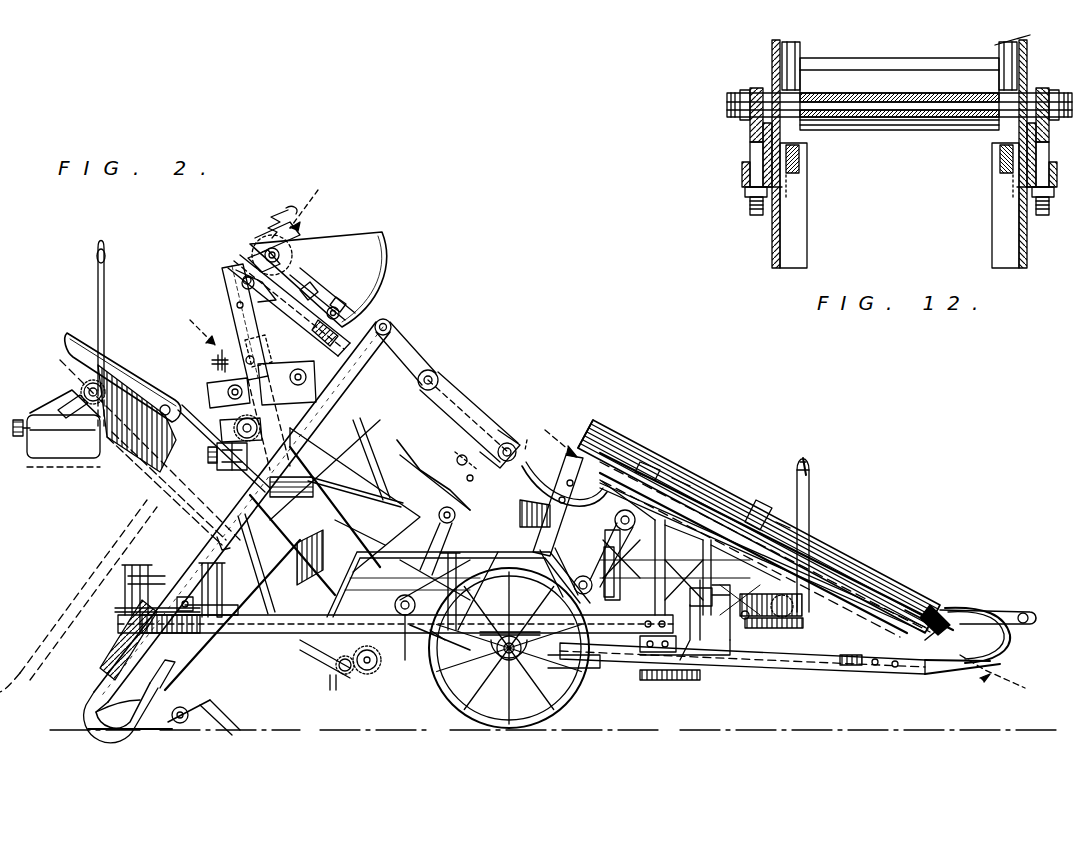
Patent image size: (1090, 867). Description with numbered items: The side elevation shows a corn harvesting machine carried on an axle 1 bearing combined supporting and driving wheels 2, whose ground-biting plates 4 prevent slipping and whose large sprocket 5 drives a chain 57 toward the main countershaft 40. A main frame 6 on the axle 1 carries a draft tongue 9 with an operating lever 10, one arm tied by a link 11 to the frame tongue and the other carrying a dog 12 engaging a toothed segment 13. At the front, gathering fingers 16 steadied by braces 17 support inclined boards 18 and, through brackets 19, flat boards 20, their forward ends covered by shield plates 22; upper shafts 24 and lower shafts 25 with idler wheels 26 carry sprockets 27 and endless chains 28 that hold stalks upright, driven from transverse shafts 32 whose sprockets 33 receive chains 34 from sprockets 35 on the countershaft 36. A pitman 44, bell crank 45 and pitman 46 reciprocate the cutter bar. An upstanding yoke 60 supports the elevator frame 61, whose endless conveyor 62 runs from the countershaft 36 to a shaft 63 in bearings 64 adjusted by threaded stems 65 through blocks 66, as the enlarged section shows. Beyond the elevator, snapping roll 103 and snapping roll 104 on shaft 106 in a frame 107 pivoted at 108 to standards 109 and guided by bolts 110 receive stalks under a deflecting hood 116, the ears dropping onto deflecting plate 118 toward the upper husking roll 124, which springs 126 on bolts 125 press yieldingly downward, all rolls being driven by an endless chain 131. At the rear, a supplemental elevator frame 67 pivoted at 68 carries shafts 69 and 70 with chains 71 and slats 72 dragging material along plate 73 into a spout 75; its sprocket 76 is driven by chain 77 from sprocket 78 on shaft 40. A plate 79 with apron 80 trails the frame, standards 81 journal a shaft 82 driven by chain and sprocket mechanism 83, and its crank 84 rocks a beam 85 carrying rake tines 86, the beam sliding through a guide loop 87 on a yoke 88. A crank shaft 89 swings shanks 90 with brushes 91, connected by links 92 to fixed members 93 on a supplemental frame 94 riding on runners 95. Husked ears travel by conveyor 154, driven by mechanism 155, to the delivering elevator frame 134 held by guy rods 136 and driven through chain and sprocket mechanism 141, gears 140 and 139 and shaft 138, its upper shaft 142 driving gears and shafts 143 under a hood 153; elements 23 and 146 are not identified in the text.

In FIG. 2, the axle 1 is at (470, 715).
In FIG. 2, the combined supporting and driving wheels 2 is at (490, 700).
In FIG. 2, the plates 4 is at (16, 420).
In FIG. 2, the large sprocket 5 is at (516, 660).
In FIG. 2, the main frame 6 is at (789, 559).
In FIG. 2, the draft tongue 9 is at (1003, 611).
In FIG. 2, the operating lever 10 is at (810, 505).
In FIG. 2, the link 11 is at (527, 413).
In FIG. 2, the dog 12 is at (528, 447).
In FIG. 2, the toothed segment 13 is at (771, 606).
In FIG. 2, the gathering fingers 16 is at (960, 663).
In FIG. 2, the braces 17 is at (835, 660).
In FIG. 2, the laterally spaced boards 18 is at (925, 664).
In FIG. 2, the brackets 19 is at (760, 500).
In FIG. 2, the flat boards 20 is at (735, 493).
In FIG. 2, the plates 22 is at (1006, 645).
In FIG. 2, the conveyor frame end 23 is at (905, 608).
In FIG. 2, the upper shafts 24 is at (648, 468).
In FIG. 2, the lower shafts 25 is at (942, 608).
In FIG. 2, the idler wheels 26 is at (840, 580).
In FIG. 2, the sprockets 27 is at (612, 480).
In FIG. 2, the endless chain 28 is at (775, 520).
In FIG. 2, the transverse shaft 32 is at (600, 445).
In FIG. 2, the sprocket 33 is at (680, 480).
In FIG. 2, the chain 34 is at (592, 565).
In FIG. 2, the sprocket 35 is at (600, 596).
In FIG. 2, the countershaft 36 is at (600, 620).
In FIG. 2, the main countershaft 40 is at (408, 616).
In FIG. 2, the pitman 44 is at (690, 547).
In FIG. 2, the bell crank 45 is at (692, 605).
In FIG. 2, the pitman 46 is at (715, 620).
In FIG. 2, the chain 57 is at (450, 690).
In FIG. 2, the upstanding yoke 60 is at (458, 573).
In FIG. 12, the elevator frame 61 is at (772, 233).
In FIG. 12, the endless conveyor 62 is at (796, 68).
In FIG. 12, the transverse shaft 63 is at (727, 105).
In FIG. 12, the bearings 64 is at (752, 90).
In FIG. 12, the threaded stems 65 is at (750, 148).
In FIG. 12, the blocks 66 is at (742, 170).
In FIG. 2, the frame of supplemental elevator 67 is at (250, 595).
In FIG. 2, the pivotal mounting 68 is at (423, 475).
In FIG. 2, the transverse shaft 69 is at (522, 446).
In FIG. 2, the transverse shaft 70 is at (180, 724).
In FIG. 2, the endless chains 71 is at (556, 505).
In FIG. 2, the transverse slats 72 is at (440, 531).
In FIG. 2, the plate 73 is at (463, 456).
In FIG. 2, the spout 75 is at (577, 496).
In FIG. 2, the sprocket 76 is at (500, 430).
In FIG. 2, the chain 77 is at (449, 591).
In FIG. 2, the sprocket 78 is at (430, 660).
In FIG. 2, the plate 79 is at (145, 731).
In FIG. 2, the apron 80 is at (152, 700).
In FIG. 2, the standards 81 is at (433, 371).
In FIG. 2, the shaft 82 is at (440, 350).
In FIG. 2, the chain and sprocket mechanism 83 is at (462, 395).
In FIG. 2, the crank 84 is at (395, 314).
In FIG. 2, the beam 85 is at (200, 540).
In FIG. 2, the rake tines 86 is at (98, 700).
In FIG. 2, the guide loop 87 is at (309, 447).
In FIG. 2, the yoke 88 is at (249, 564).
In FIG. 2, the obliquely disposed crank shaft 89 is at (175, 614).
In FIG. 2, the shank 90 is at (212, 590).
In FIG. 2, the brush 91 is at (236, 735).
In FIG. 2, the link 92 is at (135, 609).
In FIG. 2, the fixed member 93 is at (125, 576).
In FIG. 2, the supplemental frame 94 is at (190, 632).
In FIG. 2, the runners 95 is at (105, 712).
In FIG. 2, the snapping roll 103 is at (236, 275).
In FIG. 2, the snapping roll 104 is at (248, 262).
In FIG. 2, the shaft 106 is at (260, 252).
In FIG. 2, the frame 107 is at (262, 238).
In FIG. 2, the pivotal connection 108 is at (322, 294).
In FIG. 2, the small standards 109 is at (355, 294).
In FIG. 2, the bolts 110 is at (290, 236).
In FIG. 2, the deflecting hood 116 is at (318, 279).
In FIG. 2, the lower deflecting plate 118 is at (222, 292).
In FIG. 2, the upper husking roll 124 is at (240, 344).
In FIG. 2, the bolts 125 is at (222, 411).
In FIG. 2, the springs 126 is at (205, 356).
In FIG. 2, the endless chain 131 is at (374, 459).
In FIG. 2, the frame 134 is at (210, 526).
In FIG. 2, the guy rods 136 is at (340, 492).
In FIG. 2, the lower shaft 138 is at (366, 672).
In FIG. 2, the gear 139 is at (345, 675).
In FIG. 2, the gear 140 is at (336, 680).
In FIG. 2, the chain and sprocket mechanism 141 is at (330, 648).
In FIG. 2, the shaft 142 is at (72, 385).
In FIG. 2, the gears and shafts 143 is at (68, 410).
In FIG. 2, the hopper 146 is at (112, 330).
In FIG. 2, the hood 153 is at (125, 358).
In FIG. 2, the endless conveyor 154 is at (360, 520).
In FIG. 2, the gear and shaft mechanism 155 is at (217, 437).